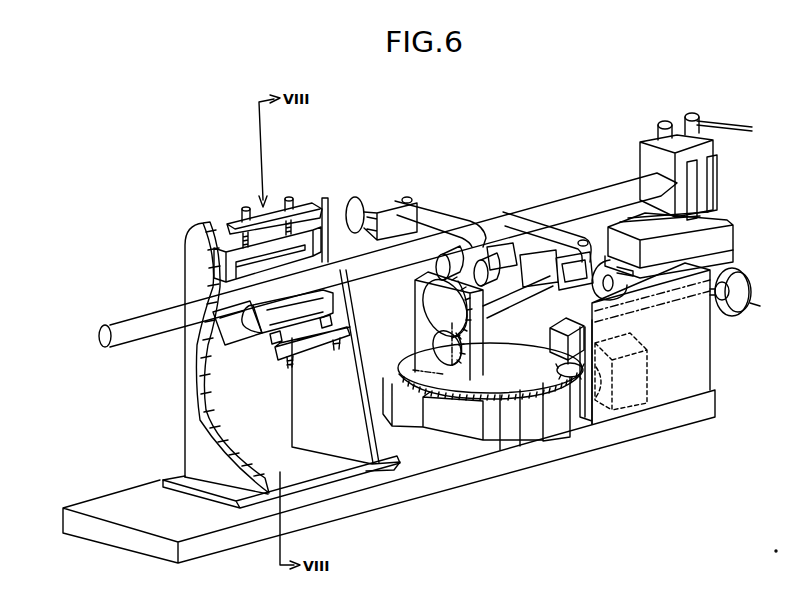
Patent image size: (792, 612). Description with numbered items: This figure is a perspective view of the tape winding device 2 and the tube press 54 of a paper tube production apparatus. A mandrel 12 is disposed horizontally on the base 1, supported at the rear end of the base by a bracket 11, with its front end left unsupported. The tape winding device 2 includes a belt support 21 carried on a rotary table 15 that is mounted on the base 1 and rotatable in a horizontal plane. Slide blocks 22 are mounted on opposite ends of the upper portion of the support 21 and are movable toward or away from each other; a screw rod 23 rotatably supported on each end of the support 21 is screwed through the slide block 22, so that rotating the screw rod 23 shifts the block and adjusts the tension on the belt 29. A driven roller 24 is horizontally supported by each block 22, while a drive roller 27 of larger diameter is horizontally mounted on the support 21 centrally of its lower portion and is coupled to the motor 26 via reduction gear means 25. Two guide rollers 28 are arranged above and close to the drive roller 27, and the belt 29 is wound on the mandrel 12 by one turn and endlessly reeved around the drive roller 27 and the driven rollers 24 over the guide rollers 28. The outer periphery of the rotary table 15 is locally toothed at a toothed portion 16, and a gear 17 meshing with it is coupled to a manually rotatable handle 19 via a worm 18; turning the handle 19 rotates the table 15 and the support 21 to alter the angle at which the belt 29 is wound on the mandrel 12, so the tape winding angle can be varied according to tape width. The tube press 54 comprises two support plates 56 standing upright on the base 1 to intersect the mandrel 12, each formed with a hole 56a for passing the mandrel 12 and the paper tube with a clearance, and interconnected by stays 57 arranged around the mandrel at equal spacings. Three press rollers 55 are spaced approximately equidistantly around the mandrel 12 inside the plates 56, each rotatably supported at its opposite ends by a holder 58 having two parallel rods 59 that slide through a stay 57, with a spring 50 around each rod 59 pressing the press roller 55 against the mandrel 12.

The base 1 is at (608, 435).
The tape winding device 2 is at (482, 207).
The bracket 11 is at (703, 190).
The mandrel 12 is at (130, 330).
The rotary table 15 is at (460, 382).
The toothed portion 16 is at (545, 400).
The gear 17 is at (575, 380).
The worm 18 is at (597, 340).
The handle 19 is at (740, 305).
The belt support 21 is at (505, 345).
The slide block 22 is at (387, 227).
The screw rod 23 is at (514, 320).
The driven roller 24 is at (420, 181).
The reduction gear means 25 is at (416, 332).
The motor 26 is at (637, 413).
The drive roller 27 is at (507, 285).
The guide roller 28 is at (512, 260).
The belt 29 is at (433, 213).
The spring 50 is at (305, 210).
The tube press 54 is at (278, 195).
The press roller 55 is at (220, 213).
The support plate 56 is at (195, 277).
The hole 56a is at (207, 291).
The stay 57 is at (257, 213).
The holder 58 is at (243, 207).
The rod 59 is at (240, 210).